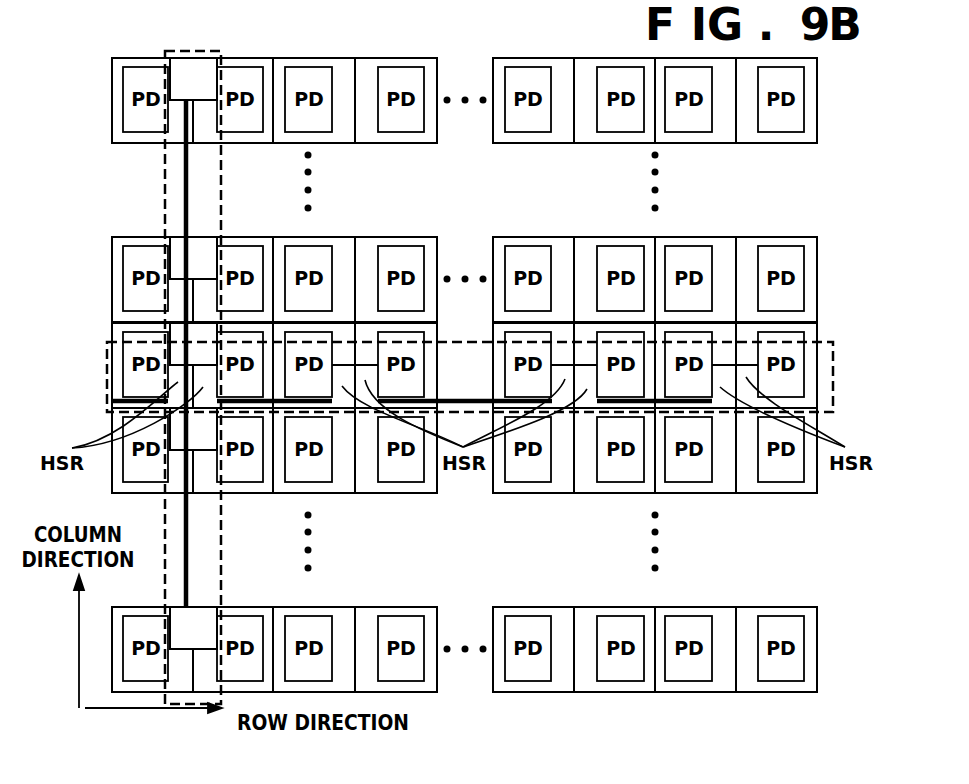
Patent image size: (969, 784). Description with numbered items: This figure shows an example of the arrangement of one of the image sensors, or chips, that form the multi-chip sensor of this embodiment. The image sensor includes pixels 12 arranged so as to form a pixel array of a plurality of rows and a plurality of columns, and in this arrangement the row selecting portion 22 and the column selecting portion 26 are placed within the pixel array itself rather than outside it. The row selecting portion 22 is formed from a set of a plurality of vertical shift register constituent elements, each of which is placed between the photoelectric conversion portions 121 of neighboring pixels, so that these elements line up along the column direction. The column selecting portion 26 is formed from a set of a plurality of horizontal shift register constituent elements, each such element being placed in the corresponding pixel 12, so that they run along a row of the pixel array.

The pixel 12 is at (143, 58).
The photoelectric conversion portion 121 is at (113, 96).
The row selecting portion 22 is at (208, 51).
The column selecting portion 26 is at (833, 342).